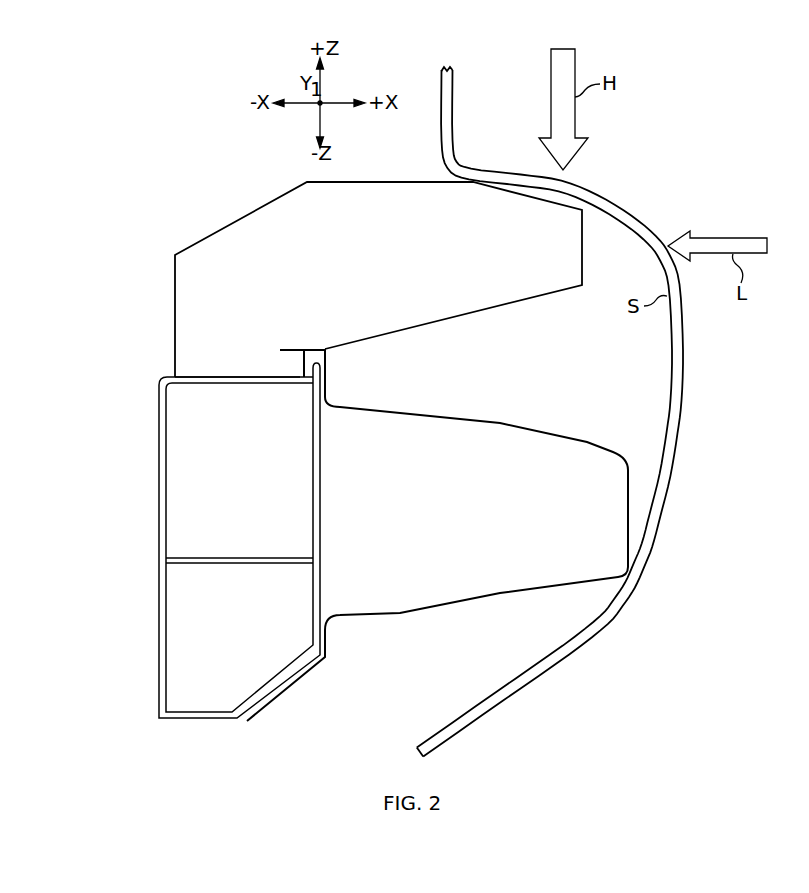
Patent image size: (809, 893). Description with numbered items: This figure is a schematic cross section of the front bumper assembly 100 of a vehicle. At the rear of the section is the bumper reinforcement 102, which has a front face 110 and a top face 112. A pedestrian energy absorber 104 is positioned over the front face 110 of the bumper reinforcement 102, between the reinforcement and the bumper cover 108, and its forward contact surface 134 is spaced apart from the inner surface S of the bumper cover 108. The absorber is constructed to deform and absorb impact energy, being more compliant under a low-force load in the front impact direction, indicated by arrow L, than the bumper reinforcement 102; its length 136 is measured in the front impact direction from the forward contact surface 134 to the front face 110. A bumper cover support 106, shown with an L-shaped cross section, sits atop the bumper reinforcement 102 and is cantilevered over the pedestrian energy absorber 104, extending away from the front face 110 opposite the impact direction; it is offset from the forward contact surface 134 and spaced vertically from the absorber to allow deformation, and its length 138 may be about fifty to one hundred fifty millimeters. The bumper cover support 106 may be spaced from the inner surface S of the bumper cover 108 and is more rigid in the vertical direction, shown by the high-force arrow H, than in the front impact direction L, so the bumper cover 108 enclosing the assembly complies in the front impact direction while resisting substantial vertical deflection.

The bumper assembly 100 is at (731, 132).
The bumper reinforcement 102 is at (189, 540).
The pedestrian energy absorber 104 is at (437, 535).
The bumper cover support 106 is at (362, 264).
The bumper cover 108 is at (600, 412).
The front face 110 is at (320, 553).
The top face 112 is at (190, 373).
The forward contact surface 134 is at (630, 518).
The length of the pedestrian energy absorbers 136 is at (628, 494).
The length of the bumper cover supports 138 is at (582, 285).